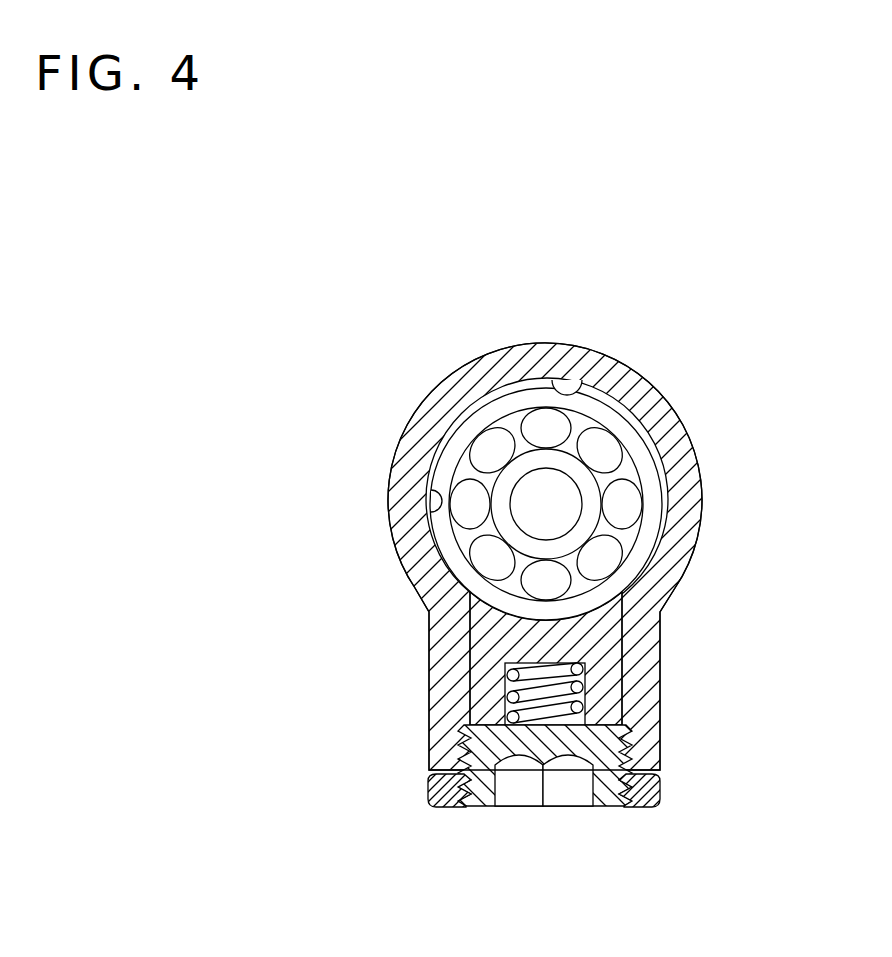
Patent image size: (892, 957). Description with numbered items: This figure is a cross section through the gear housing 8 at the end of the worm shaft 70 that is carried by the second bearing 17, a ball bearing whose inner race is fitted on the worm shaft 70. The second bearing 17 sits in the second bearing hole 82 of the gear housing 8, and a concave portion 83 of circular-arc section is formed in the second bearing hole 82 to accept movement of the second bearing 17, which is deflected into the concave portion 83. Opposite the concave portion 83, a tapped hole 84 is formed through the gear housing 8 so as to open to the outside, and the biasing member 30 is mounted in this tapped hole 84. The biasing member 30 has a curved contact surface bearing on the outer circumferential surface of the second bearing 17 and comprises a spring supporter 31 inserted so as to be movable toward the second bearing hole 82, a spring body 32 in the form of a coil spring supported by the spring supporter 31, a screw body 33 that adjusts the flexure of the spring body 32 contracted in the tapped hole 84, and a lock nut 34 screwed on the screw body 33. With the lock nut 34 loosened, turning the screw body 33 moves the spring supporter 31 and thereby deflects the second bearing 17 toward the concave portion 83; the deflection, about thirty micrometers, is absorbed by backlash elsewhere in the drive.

The gear housing 8 is at (651, 378).
The second bearing 17 is at (651, 519).
The biasing member 30 is at (480, 683).
The spring supporter 31 is at (607, 629).
The spring body 32 is at (587, 686).
The screw body 33 is at (617, 736).
The lock nut 34 is at (660, 794).
The worm shaft 70 is at (566, 492).
The second bearing hole 82 is at (437, 510).
The concave portion 83 is at (583, 387).
The tapped hole 84 is at (482, 745).